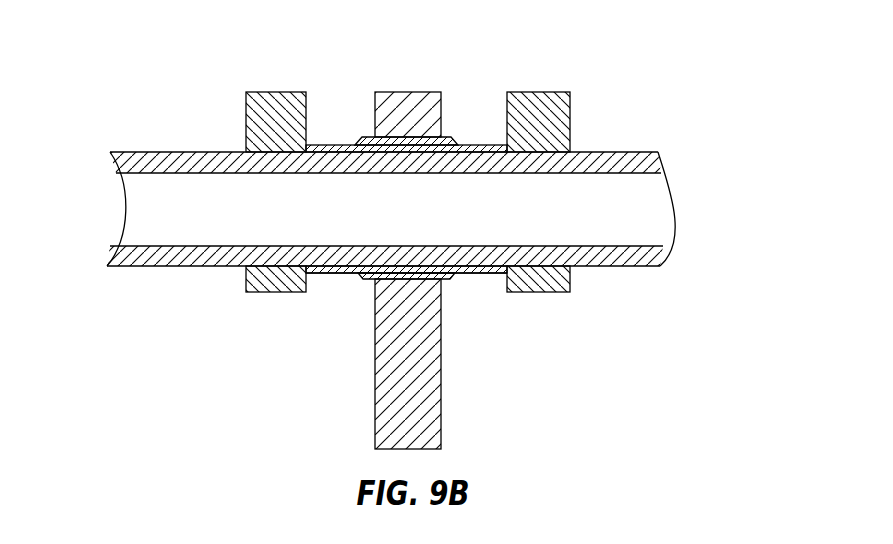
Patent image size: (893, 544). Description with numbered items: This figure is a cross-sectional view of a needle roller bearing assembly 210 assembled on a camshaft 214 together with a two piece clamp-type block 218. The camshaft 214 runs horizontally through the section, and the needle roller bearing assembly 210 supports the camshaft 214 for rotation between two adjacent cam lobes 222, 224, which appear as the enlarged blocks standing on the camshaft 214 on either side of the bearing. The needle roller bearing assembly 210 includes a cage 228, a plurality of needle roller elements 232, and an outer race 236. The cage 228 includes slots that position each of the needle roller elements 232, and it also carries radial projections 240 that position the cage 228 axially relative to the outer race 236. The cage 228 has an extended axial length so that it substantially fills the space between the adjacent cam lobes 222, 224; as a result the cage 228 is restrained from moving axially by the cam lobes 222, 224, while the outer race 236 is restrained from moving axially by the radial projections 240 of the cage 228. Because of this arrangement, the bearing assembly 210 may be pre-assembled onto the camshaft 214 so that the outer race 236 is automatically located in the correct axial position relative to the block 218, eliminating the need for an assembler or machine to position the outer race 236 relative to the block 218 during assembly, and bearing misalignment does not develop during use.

The needle roller bearing assembly 210 is at (363, 277).
The camshaft 214 is at (651, 114).
The two piece clamp-type block 218 is at (408, 107).
The cam lobe 222 is at (277, 92).
The cam lobe 224 is at (546, 105).
The cage 228 is at (475, 273).
The needle roller elements 232 is at (435, 138).
The outer race 236 is at (415, 276).
The radial projections 240 is at (363, 138).